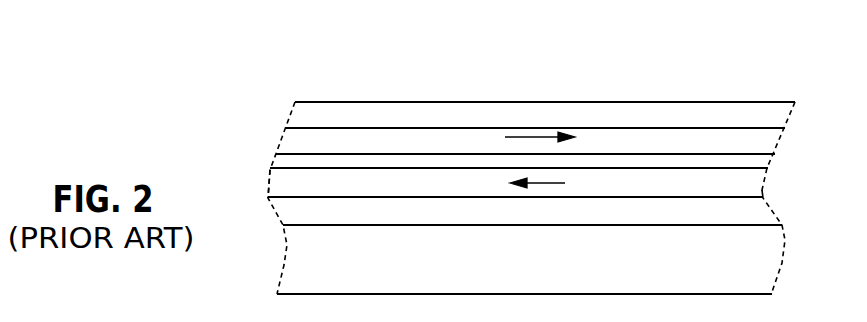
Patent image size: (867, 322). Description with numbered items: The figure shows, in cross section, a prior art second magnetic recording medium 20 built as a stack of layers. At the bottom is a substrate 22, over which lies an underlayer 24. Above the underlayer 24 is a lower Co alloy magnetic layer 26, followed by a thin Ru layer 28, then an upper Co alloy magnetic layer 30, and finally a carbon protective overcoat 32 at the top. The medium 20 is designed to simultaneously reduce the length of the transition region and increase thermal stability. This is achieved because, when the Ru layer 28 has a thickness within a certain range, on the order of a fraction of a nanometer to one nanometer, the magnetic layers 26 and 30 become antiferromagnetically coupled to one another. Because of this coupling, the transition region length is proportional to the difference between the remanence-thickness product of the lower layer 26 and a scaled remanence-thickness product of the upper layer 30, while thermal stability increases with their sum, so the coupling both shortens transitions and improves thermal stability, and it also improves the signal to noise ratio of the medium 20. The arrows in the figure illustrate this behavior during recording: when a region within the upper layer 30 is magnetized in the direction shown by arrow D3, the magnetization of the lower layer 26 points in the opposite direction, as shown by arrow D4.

The second magnetic recording medium 20 is at (388, 75).
The substrate 22 is at (688, 276).
The underlayer 24 is at (757, 213).
The lower Co alloy magnetic layer 26 is at (272, 189).
The Ru layer 28 is at (468, 160).
The upper Co alloy magnetic layer 30 is at (692, 143).
The carbon protective overcoat 32 is at (630, 118).
The magnetization direction arrow D3 is at (545, 137).
The magnetization direction arrow D4 is at (542, 183).